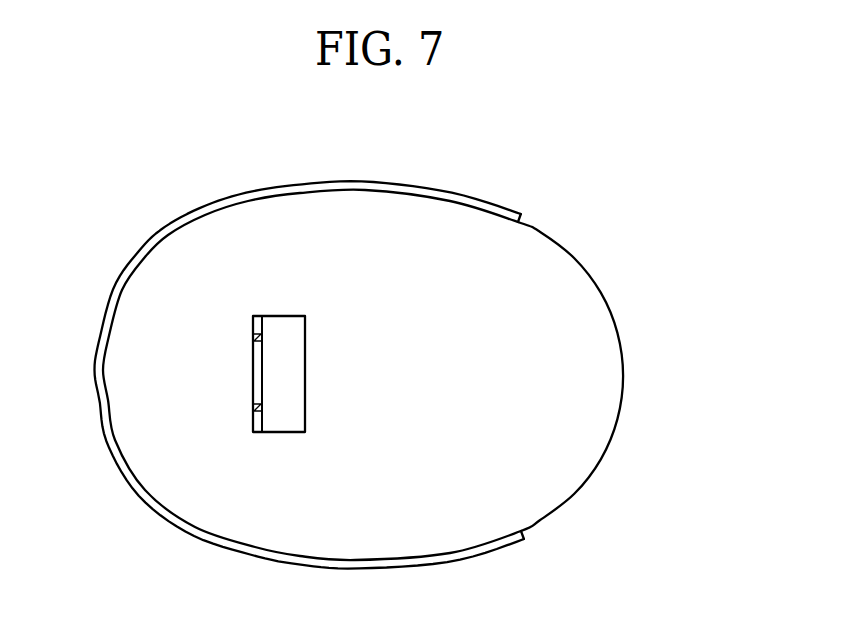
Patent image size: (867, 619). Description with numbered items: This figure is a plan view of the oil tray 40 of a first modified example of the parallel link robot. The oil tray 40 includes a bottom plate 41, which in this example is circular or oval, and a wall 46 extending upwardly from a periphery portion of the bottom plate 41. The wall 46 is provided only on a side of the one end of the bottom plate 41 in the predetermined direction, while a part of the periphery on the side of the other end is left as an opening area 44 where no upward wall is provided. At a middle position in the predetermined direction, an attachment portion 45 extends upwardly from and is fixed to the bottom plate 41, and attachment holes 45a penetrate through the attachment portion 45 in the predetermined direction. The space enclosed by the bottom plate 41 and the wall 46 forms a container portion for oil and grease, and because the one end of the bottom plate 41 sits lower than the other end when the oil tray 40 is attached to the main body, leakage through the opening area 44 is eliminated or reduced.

The oil tray 40 is at (162, 232).
The bottom plate 41 is at (528, 450).
The opening area 44 is at (613, 346).
The attachment portion 45 is at (262, 371).
The attachment holes 45a is at (256, 336).
The wall 46 is at (502, 212).